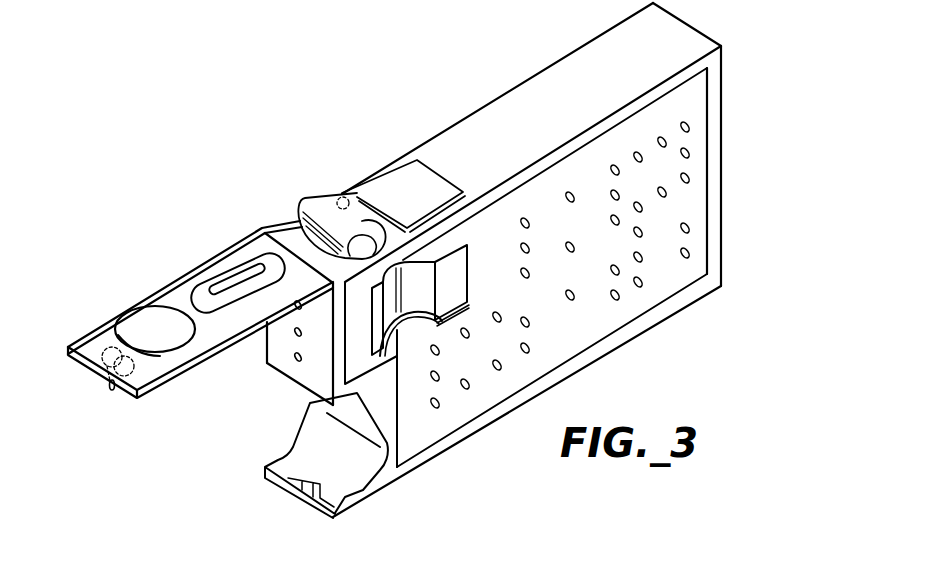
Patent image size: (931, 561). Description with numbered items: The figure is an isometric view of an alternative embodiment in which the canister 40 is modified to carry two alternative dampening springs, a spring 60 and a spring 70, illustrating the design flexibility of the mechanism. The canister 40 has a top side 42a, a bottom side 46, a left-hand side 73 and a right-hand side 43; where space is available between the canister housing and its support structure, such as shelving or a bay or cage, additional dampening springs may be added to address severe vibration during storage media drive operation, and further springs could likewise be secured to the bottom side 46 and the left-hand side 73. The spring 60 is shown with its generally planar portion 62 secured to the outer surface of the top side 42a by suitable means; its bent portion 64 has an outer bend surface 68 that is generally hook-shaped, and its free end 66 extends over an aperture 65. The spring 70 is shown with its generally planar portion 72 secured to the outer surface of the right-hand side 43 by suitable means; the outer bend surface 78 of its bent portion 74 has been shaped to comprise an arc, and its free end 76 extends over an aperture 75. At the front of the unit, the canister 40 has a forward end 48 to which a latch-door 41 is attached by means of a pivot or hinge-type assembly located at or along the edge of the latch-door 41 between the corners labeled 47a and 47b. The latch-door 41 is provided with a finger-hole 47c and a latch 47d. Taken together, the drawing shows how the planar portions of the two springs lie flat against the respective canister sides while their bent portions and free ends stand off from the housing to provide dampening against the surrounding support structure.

The canister 40 is at (524, 71).
The canister top side 42a is at (675, 47).
The left-hand side 73 is at (437, 129).
The bottom side 46 is at (647, 339).
The spring 60 is at (381, 167).
The generally planar portion 62 is at (432, 190).
The bent portion 64 is at (312, 165).
The aperture 65 is at (305, 235).
The free end 66 is at (300, 222).
The outer bend surface 68 is at (311, 189).
The latch-door 41 is at (178, 286).
The corner 47a is at (260, 227).
The corner 47b is at (327, 291).
The finger-hole 47c is at (142, 328).
The latch 47d is at (108, 391).
The forward end 48 is at (302, 386).
The right-hand side 43 is at (463, 402).
The aperture 75 is at (398, 353).
The free end 76 is at (380, 357).
The spring 70 is at (472, 261).
The generally planar portion 72 is at (456, 278).
The bent portion 74 is at (434, 251).
The outer bend surface 78 is at (416, 290).